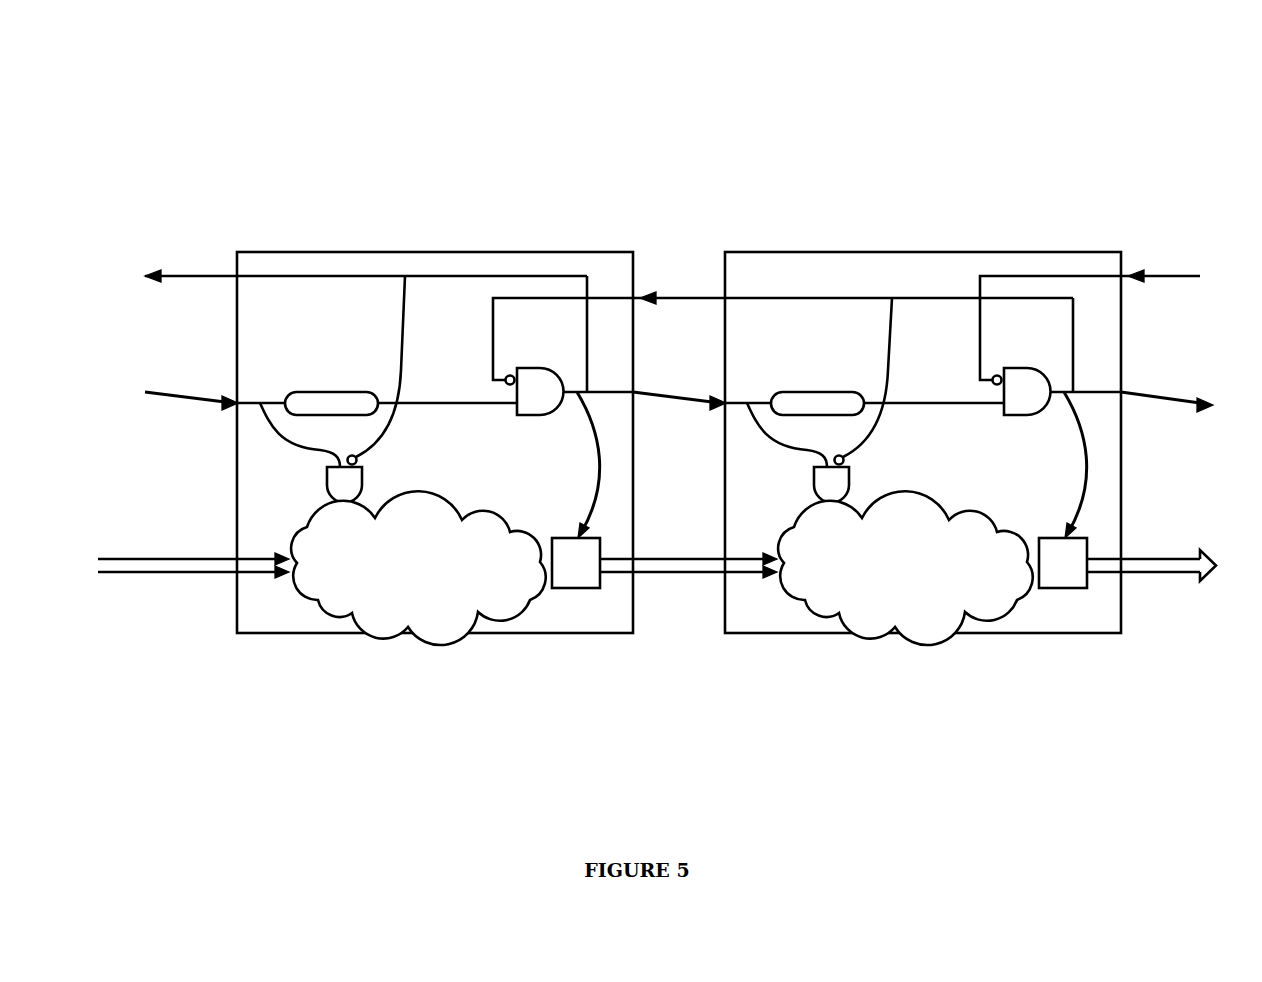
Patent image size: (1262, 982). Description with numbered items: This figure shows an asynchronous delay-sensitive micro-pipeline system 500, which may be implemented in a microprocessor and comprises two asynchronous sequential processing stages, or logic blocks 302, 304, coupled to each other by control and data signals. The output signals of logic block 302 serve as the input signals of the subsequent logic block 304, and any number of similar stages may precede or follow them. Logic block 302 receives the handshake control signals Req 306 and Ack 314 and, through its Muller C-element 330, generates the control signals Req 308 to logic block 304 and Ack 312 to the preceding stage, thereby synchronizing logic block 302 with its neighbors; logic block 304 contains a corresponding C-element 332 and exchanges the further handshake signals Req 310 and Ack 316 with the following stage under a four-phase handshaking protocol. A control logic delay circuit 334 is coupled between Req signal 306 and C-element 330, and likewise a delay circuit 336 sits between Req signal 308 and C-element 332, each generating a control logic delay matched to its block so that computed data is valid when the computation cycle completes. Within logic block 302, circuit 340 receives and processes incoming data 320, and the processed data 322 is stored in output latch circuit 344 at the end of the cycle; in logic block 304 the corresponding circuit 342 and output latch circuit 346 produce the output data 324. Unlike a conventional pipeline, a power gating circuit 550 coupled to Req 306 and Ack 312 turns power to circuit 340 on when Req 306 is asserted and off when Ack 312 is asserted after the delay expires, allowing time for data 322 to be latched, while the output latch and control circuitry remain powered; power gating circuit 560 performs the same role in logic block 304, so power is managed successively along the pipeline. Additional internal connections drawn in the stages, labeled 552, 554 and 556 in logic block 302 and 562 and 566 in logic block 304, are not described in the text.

The system 500 is at (721, 105).
The logic block 302 is at (470, 250).
The logic block 304 is at (970, 250).
The Req signal 306 is at (197, 355).
The Req signal 308 is at (684, 350).
The Req signal 310 is at (1177, 350).
The Ack signal 312 is at (197, 232).
The Ack signal 314 is at (687, 250).
The Ack signal 316 is at (1180, 228).
The incoming data 320 is at (190, 523).
The processed data 322 is at (684, 520).
The data signal 324 is at (1177, 518).
The Muller C-element 330 is at (530, 418).
The C-element 332 is at (1017, 418).
The control logic delay circuit 334 is at (338, 392).
The control logic delay circuit 336 is at (823, 392).
The circuit 340 is at (445, 492).
The circuit 342 is at (930, 492).
The output latch circuit 344 is at (570, 535).
The output latch circuit 346 is at (1058, 535).
The power gating circuit 550 is at (325, 485).
The request branch line of first stage 552 is at (278, 428).
The acknowledge feedback line of first stage 554 is at (398, 330).
The ready signal of first stage 556 is at (600, 452).
The power gating circuit 560 is at (883, 348).
The request branch line of second stage 562 is at (765, 428).
The ready signal of second stage 566 is at (1085, 447).